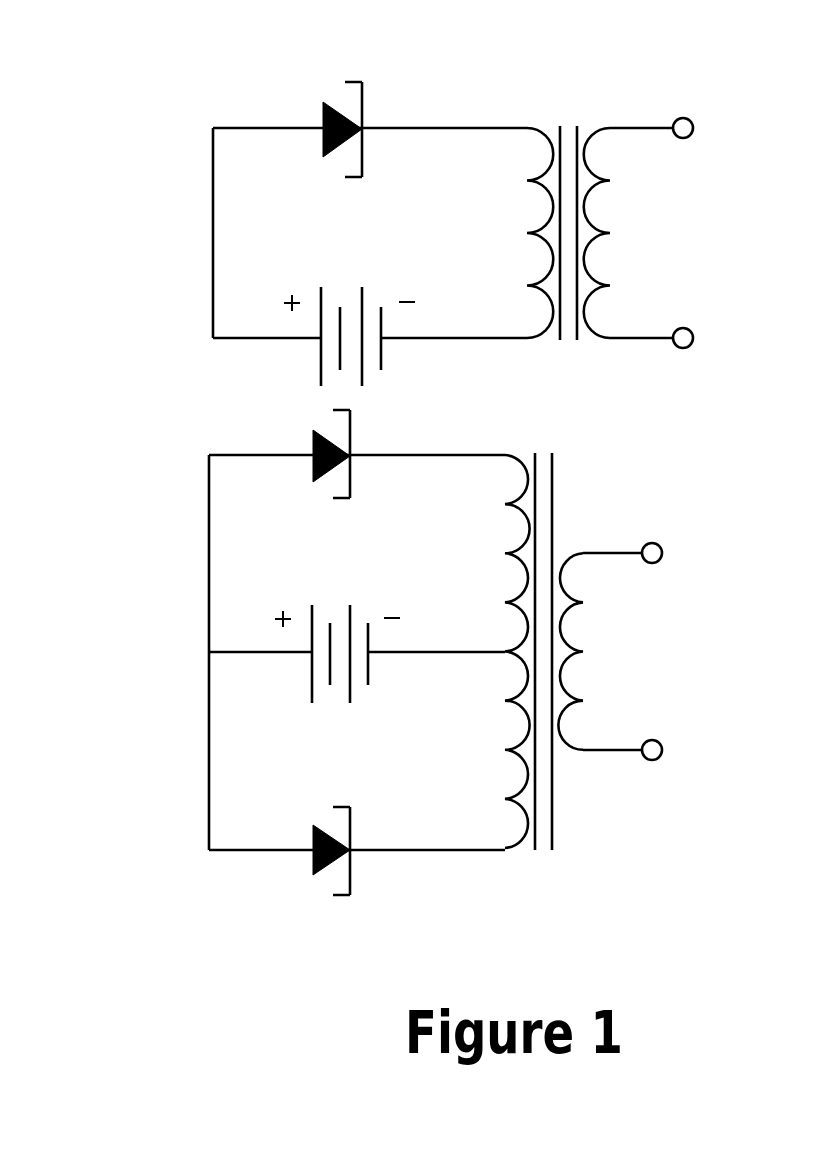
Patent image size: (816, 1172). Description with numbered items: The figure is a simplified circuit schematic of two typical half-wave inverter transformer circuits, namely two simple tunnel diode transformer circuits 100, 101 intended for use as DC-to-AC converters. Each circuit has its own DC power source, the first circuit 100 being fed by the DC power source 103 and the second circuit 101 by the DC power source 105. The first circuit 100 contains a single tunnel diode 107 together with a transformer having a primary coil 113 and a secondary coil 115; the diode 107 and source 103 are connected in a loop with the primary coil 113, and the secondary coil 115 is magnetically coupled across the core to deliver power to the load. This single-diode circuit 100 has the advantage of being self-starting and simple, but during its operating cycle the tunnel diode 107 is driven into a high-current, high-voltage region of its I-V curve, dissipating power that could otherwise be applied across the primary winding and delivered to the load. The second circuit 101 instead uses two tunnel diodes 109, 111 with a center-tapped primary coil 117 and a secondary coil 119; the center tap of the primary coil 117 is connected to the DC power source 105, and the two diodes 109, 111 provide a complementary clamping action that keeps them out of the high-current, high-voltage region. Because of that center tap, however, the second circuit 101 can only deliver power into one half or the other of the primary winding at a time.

The tunnel diode transformer circuit 100 is at (170, 123).
The tunnel diode transformer circuit 101 is at (168, 460).
The DC power source 103 is at (362, 287).
The DC power source 105 is at (333, 605).
The tunnel diode 107 is at (362, 127).
The tunnel diode 109 is at (350, 455).
The tunnel diode 111 is at (352, 843).
The primary coil 113 is at (532, 127).
The secondary coil 115 is at (595, 128).
The center-tapped primary coil 117 is at (517, 455).
The secondary coil 119 is at (583, 553).